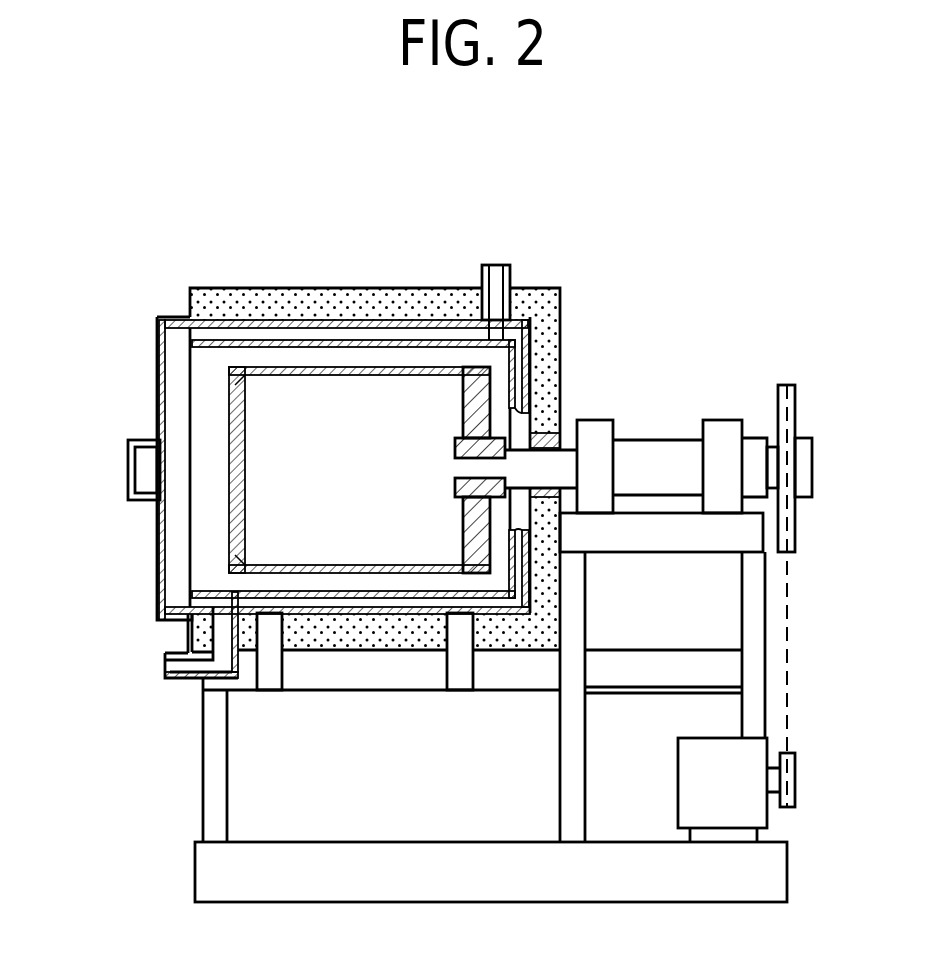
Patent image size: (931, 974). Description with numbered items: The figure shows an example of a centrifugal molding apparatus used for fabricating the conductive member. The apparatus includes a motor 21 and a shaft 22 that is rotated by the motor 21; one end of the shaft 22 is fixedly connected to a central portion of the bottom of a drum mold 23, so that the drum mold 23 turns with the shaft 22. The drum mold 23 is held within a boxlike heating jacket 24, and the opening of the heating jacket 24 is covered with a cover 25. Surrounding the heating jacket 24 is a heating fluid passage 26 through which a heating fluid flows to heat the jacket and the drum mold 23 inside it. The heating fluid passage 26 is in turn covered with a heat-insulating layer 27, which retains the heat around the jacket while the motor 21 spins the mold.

The motor 21 is at (693, 780).
The shaft 22 is at (657, 450).
The drum mold 23 is at (235, 420).
The heating jacket 24 is at (207, 351).
The cover 25 is at (160, 600).
The heating fluid passage 26 is at (372, 335).
The heat-insulating layer 27 is at (552, 310).